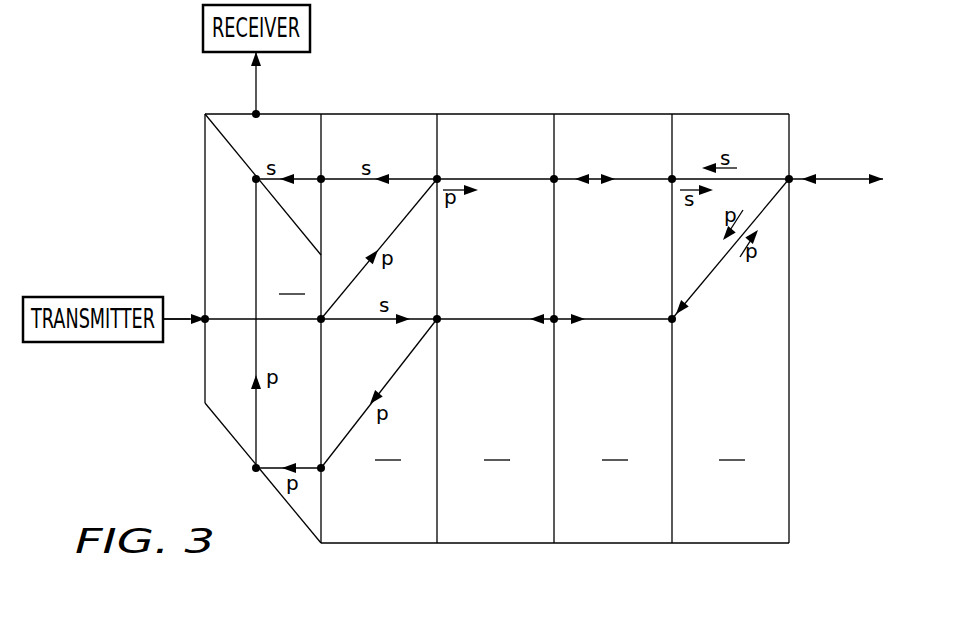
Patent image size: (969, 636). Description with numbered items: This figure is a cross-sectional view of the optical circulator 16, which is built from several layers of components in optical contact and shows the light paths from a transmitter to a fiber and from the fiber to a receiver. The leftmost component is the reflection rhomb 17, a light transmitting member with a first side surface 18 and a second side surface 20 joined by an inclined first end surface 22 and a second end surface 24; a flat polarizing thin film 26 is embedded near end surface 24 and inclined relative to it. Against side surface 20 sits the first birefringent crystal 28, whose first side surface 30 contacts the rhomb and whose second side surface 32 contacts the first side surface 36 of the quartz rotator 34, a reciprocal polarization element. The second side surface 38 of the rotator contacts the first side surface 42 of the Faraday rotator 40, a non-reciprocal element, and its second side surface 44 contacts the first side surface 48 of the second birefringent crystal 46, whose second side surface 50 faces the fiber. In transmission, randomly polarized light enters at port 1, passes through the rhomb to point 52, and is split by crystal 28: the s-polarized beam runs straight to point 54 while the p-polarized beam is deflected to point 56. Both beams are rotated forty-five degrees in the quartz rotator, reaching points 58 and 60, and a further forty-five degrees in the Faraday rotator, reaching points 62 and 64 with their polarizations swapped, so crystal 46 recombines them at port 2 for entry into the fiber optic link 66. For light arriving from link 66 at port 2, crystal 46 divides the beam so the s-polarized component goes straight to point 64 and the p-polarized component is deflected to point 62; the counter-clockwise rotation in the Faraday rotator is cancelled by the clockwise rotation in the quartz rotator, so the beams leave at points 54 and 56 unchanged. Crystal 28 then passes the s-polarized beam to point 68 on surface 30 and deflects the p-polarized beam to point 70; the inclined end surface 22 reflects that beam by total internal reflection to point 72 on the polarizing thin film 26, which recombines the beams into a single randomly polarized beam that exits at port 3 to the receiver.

The port 1 is at (204, 318).
The port 2 is at (797, 165).
The port 3 is at (258, 114).
The optical circulator 16 is at (498, 80).
The reflection rhomb 17 is at (292, 281).
The first side surface 18 is at (204, 230).
The second side surface 20 is at (324, 544).
The first end surface 22 is at (231, 436).
The second end surface 24 is at (213, 114).
The polarizing thin film 26 is at (226, 140).
The first birefringent crystal 28 is at (388, 447).
The first side surface 30 is at (325, 120).
The second side surface 32 is at (442, 120).
The quartz rotator 34 is at (497, 447).
The first side surface 36 is at (438, 544).
The second side surface 38 is at (555, 544).
The Faraday rotator 40 is at (615, 447).
The first side surface 42 is at (548, 120).
The second side surface 44 is at (678, 122).
The second birefringent crystal 46 is at (732, 447).
The first side surface 48 is at (673, 544).
The second side surface 50 is at (790, 544).
The point 52 is at (324, 322).
The point 54 is at (440, 322).
The point 56 is at (440, 178).
The point 58 is at (557, 322).
The point 60 is at (556, 182).
The point 62 is at (674, 322).
The point 64 is at (670, 182).
The fiber optic link 66 is at (845, 176).
The point 68 is at (320, 178).
The point 70 is at (325, 472).
The point 72 is at (254, 182).